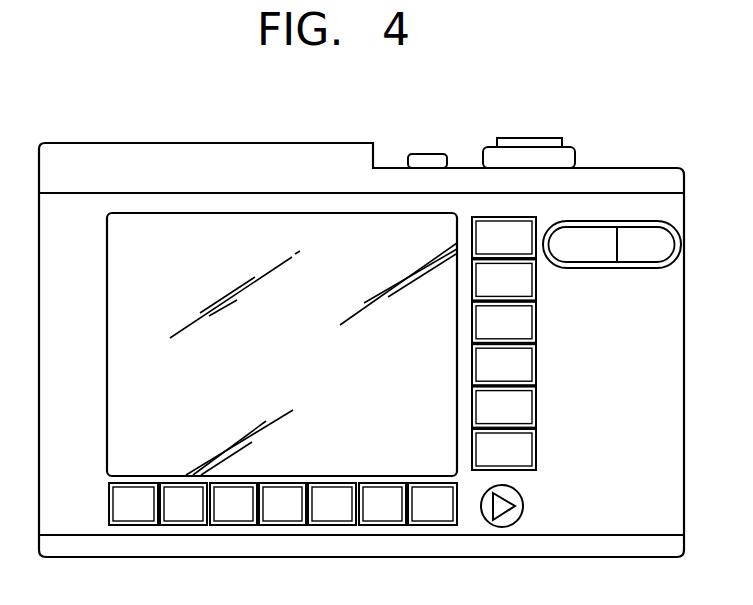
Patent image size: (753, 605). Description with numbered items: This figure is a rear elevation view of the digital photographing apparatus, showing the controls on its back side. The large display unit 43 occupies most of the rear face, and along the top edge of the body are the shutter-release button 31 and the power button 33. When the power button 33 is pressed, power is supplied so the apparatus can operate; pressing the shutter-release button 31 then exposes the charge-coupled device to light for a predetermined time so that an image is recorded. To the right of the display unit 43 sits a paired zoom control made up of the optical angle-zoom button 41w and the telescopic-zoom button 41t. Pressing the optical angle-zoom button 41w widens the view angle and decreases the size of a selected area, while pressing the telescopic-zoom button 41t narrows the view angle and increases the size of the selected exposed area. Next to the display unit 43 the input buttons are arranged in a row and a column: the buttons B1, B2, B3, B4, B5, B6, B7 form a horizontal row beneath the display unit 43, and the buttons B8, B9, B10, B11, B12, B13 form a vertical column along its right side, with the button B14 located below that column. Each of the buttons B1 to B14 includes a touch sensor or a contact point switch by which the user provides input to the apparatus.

The display unit 43 is at (180, 227).
The power button 33 is at (427, 158).
The shutter-release button 31 is at (530, 143).
The optical angle-zoom button 41w is at (583, 244).
The telescopic-zoom button 41t is at (646, 244).
The input button B1 is at (133, 504).
The input button B2 is at (183, 504).
The input button B3 is at (233, 504).
The input button B4 is at (282, 504).
The input button B5 is at (332, 504).
The input button B6 is at (382, 504).
The input button B7 is at (432, 504).
The input button B8 is at (504, 237).
The input button B9 is at (504, 279).
The input button B10 is at (504, 322).
The input button B11 is at (504, 364).
The input button B12 is at (504, 407).
The input button B13 is at (504, 449).
The input button B14 is at (523, 506).